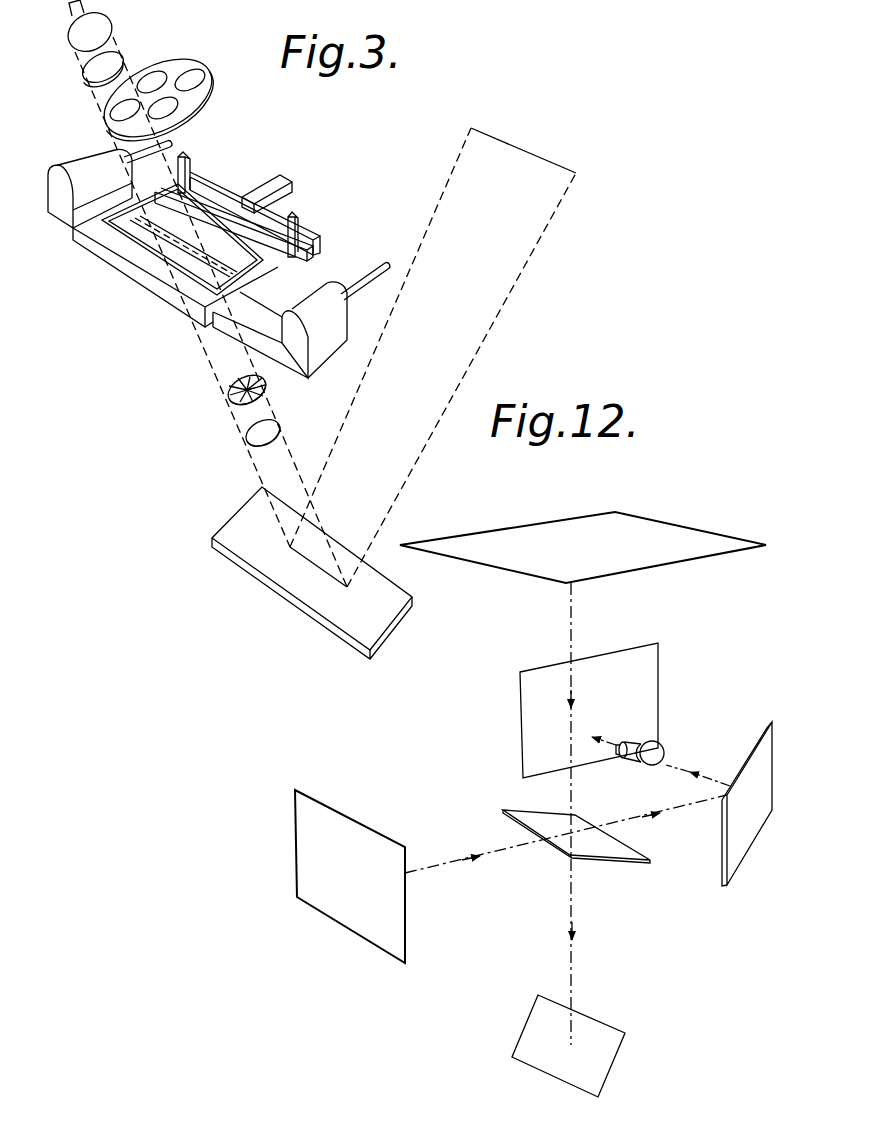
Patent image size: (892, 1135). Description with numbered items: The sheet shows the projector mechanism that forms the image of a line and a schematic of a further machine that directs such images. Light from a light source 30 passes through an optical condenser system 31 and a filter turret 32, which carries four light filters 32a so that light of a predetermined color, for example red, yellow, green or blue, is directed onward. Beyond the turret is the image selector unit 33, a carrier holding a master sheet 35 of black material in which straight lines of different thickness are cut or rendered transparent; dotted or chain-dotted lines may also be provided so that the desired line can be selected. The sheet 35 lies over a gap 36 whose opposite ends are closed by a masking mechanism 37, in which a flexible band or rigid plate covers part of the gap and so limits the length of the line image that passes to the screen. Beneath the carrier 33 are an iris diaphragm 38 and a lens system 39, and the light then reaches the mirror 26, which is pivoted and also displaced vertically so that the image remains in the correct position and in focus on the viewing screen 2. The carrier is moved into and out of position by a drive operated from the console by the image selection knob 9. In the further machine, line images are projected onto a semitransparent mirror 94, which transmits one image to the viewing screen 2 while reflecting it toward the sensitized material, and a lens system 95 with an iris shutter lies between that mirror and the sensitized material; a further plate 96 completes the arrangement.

In FIG. 3, the light source 30 is at (98, 30).
In FIG. 3, the optical condenser system 31 is at (117, 58).
In FIG. 3, the filter turret 32 is at (207, 70).
In FIG. 3, the light filters 32a is at (190, 80).
In FIG. 3, the image selector unit 33 is at (110, 278).
In FIG. 3, the master sheet 35 is at (208, 278).
In FIG. 3, the gap 36 is at (287, 295).
In FIG. 3, the masking mechanism 37 is at (56, 172).
In FIG. 3, the iris diaphragm 38 is at (232, 400).
In FIG. 3, the lens system 39 is at (250, 438).
In FIG. 3, the mirror 26 is at (247, 517).
In FIG. 12, the image selection knob 9 is at (648, 679).
In FIG. 12, the lens system 95 is at (656, 751).
In FIG. 12, the reflector plate 96 is at (765, 770).
In FIG. 12, the semitransparent mirror 94 is at (630, 862).
In FIG. 12, the viewing screen 2 is at (598, 1062).